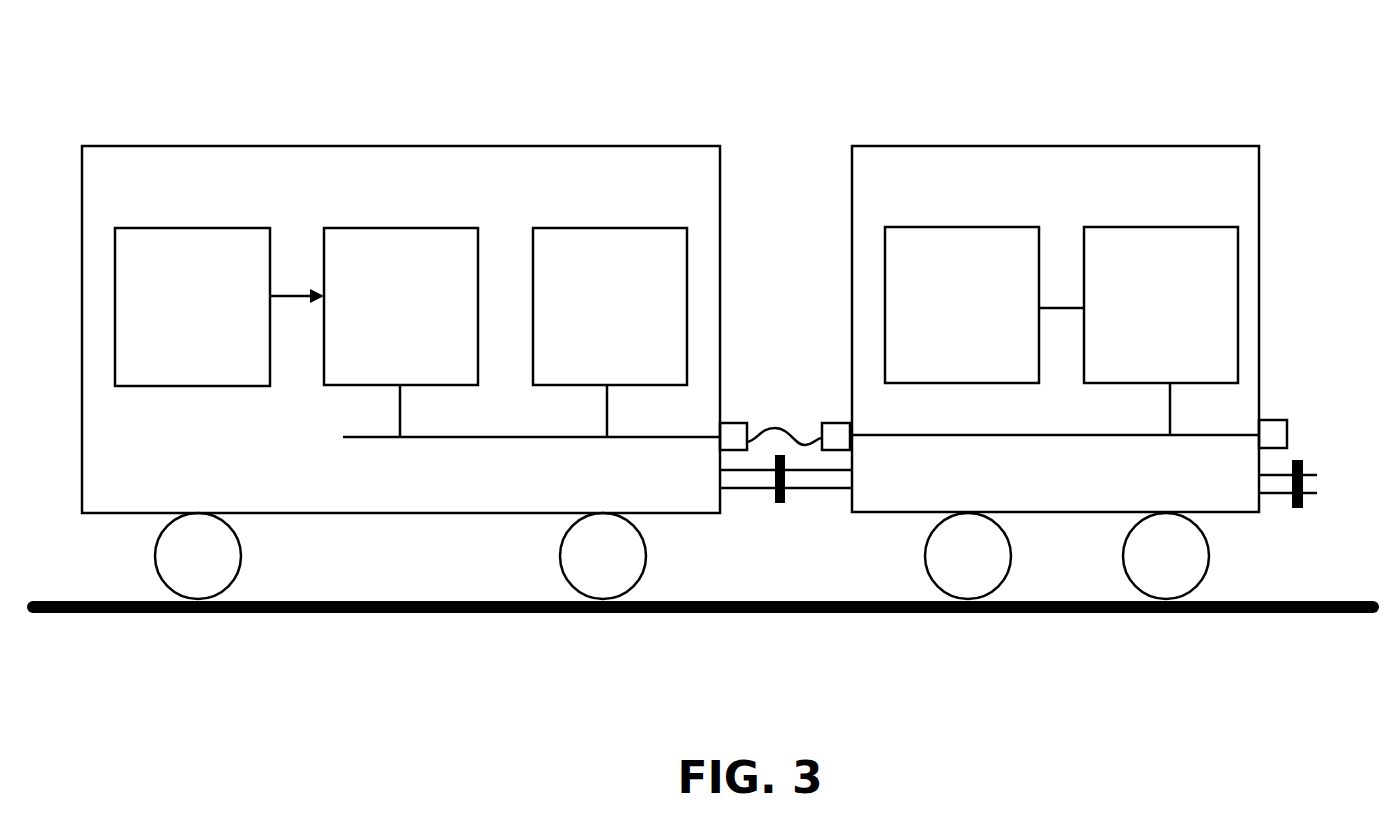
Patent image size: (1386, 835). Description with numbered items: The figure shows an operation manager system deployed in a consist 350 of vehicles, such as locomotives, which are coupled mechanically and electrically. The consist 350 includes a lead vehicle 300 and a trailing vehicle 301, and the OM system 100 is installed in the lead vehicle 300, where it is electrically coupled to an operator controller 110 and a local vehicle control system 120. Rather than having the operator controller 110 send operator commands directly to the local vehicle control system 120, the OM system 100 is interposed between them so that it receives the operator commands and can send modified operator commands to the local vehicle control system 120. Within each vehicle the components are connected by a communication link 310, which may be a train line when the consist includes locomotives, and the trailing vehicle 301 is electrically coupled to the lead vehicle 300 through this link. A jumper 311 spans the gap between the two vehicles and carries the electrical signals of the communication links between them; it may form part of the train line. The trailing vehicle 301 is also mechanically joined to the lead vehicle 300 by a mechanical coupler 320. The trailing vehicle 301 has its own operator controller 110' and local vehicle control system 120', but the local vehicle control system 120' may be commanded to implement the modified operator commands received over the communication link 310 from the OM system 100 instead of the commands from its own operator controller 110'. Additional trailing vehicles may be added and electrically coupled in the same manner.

The consist 350 is at (721, 72).
The lead vehicle 300 is at (401, 372).
The trailing vehicle 301 is at (1084, 372).
The operator controller 110 is at (192, 307).
The OM system 100 is at (401, 306).
The local vehicle control system 120 is at (610, 306).
The operator controller 110' is at (962, 305).
The local vehicle control system 120' is at (1161, 305).
The communication link 310 is at (453, 437).
The jumper 311 is at (772, 430).
The mechanical coupler 320 is at (778, 503).